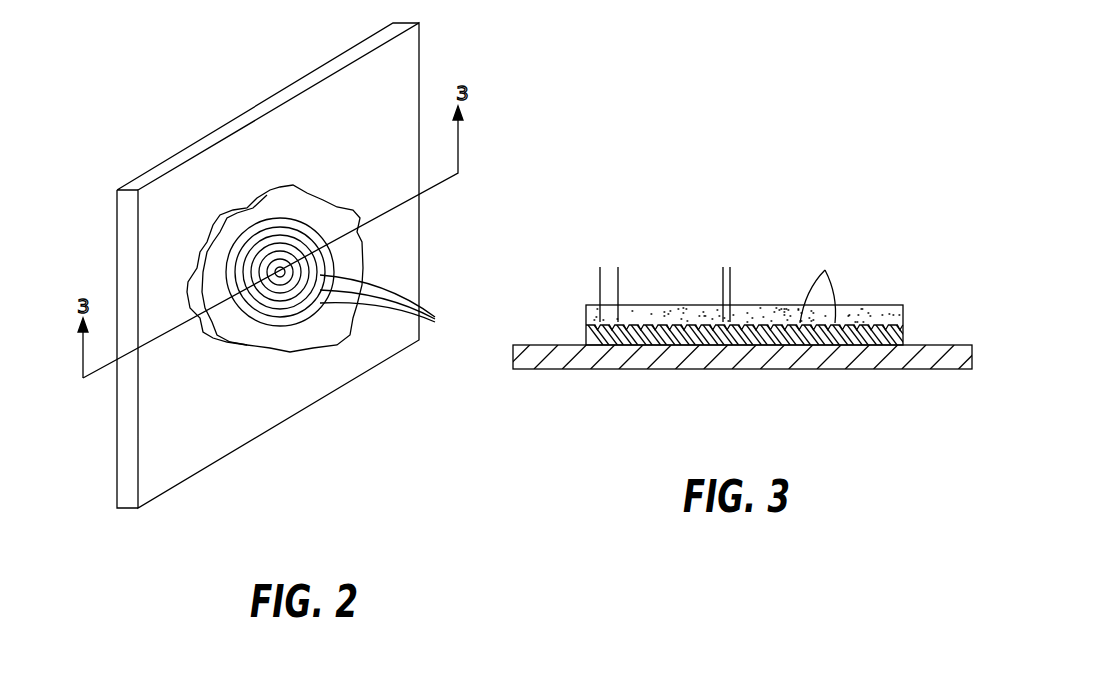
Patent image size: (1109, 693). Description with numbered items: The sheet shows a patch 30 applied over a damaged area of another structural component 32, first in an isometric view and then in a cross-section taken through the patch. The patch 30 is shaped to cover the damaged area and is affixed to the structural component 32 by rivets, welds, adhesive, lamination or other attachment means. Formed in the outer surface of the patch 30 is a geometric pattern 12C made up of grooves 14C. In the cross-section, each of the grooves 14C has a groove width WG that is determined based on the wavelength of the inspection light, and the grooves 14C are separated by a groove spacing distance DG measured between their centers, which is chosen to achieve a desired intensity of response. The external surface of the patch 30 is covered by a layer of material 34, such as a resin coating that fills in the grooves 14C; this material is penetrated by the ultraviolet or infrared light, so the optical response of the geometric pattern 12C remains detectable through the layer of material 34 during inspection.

In FIG. 2, the geometric pattern 12C is at (333, 334).
In FIG. 3, the geometric pattern 12C is at (861, 309).
In FIG. 2, the grooves 14C is at (398, 303).
In FIG. 3, the grooves 14C is at (824, 283).
In FIG. 2, the patch 30 is at (287, 203).
In FIG. 3, the patch 30 is at (590, 336).
In FIG. 2, the structural component 32 is at (218, 153).
In FIG. 3, the structural component 32 is at (627, 370).
In FIG. 3, the layer of material 34 is at (650, 305).
In FIG. 3, the groove spacing distance DG is at (641, 285).
In FIG. 3, the groove width WG is at (695, 285).